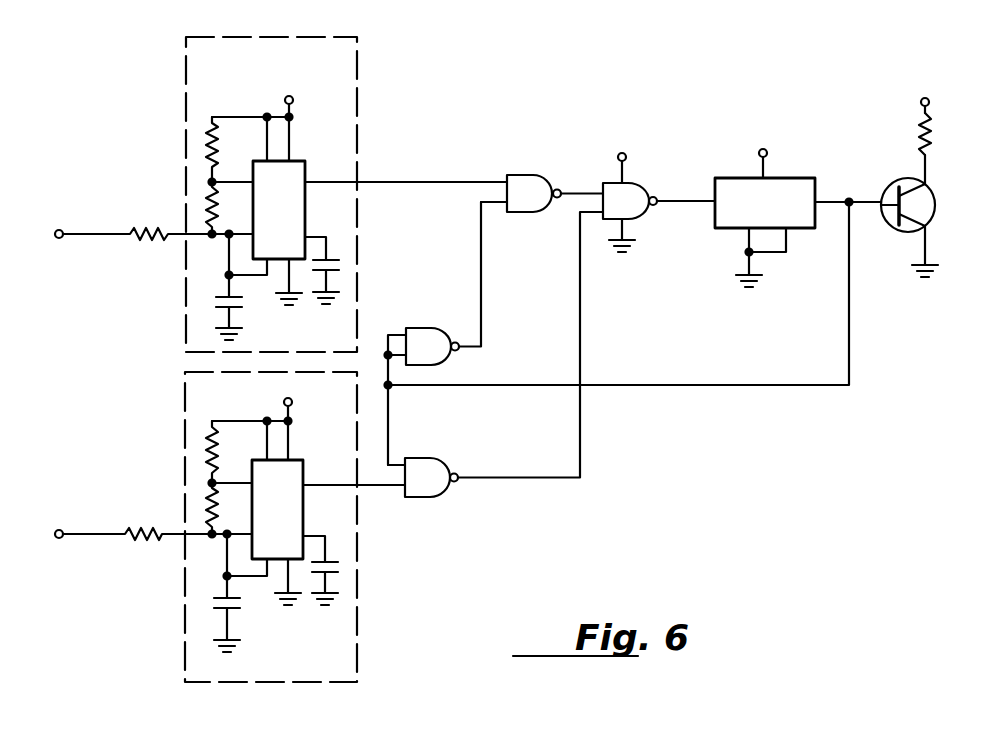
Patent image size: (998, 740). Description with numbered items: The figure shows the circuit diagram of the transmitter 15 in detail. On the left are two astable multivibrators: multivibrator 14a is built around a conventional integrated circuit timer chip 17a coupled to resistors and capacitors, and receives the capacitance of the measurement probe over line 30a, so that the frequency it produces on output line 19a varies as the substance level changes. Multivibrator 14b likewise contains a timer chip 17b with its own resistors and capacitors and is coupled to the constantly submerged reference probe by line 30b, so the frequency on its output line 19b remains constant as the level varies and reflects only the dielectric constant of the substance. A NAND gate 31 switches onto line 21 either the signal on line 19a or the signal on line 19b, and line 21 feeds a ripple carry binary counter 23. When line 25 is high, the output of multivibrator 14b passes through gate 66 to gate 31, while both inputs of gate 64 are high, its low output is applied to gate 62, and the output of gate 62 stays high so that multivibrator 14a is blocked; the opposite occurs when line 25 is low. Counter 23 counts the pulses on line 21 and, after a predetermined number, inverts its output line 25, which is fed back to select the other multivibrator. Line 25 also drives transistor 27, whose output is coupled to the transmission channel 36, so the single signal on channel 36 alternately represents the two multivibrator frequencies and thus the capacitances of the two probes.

The astable multivibrator 14a is at (358, 85).
The astable multivibrator 14b is at (355, 630).
The integrated circuit timer chip 17a is at (295, 173).
The integrated circuit timer chip 17b is at (288, 502).
The line 30a is at (101, 231).
The line 30b is at (100, 532).
The output line 19a is at (405, 182).
The output line 19b is at (382, 485).
The gate 62 is at (522, 180).
The gate 64 is at (428, 338).
The gate 66 is at (427, 468).
The NAND gate 31 is at (633, 192).
The line 21 is at (677, 198).
The ripple carry binary counter 23 is at (785, 190).
The output line 25 is at (832, 200).
The transistor 27 is at (927, 205).
The transmission channel 36 is at (927, 162).
The transmitter 15 is at (657, 493).